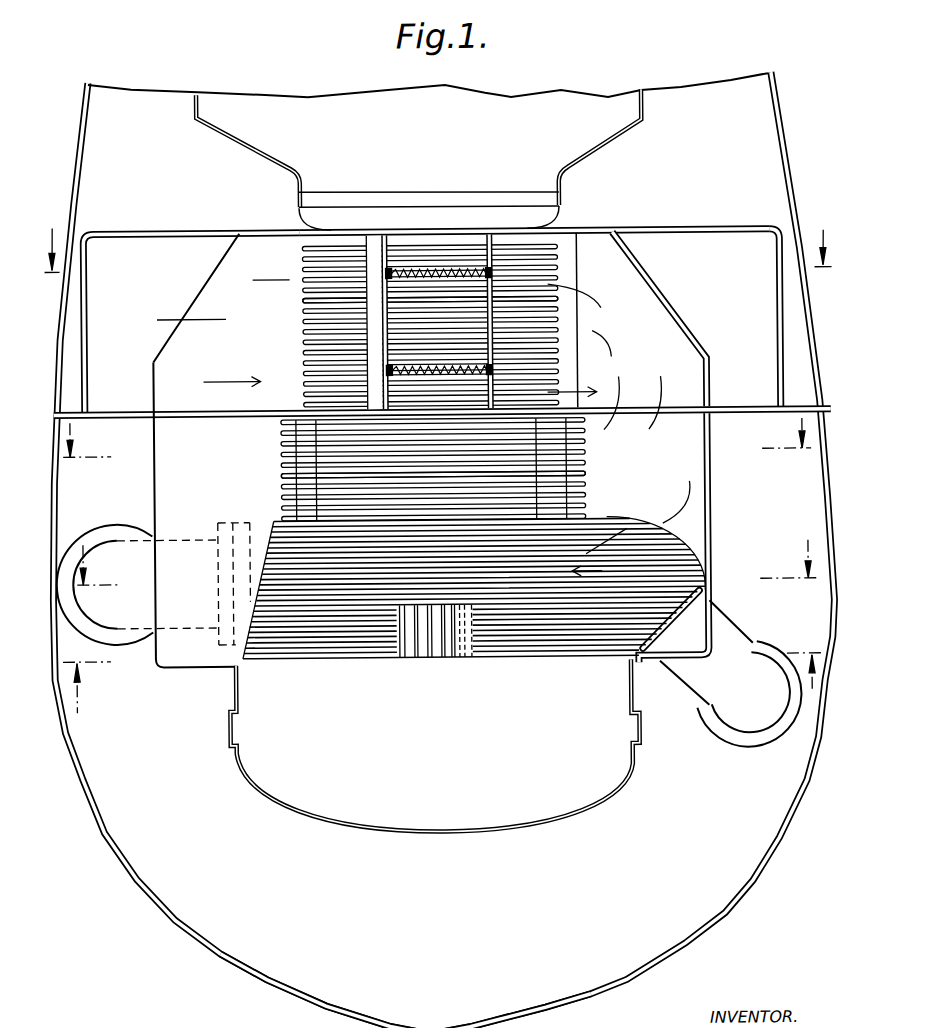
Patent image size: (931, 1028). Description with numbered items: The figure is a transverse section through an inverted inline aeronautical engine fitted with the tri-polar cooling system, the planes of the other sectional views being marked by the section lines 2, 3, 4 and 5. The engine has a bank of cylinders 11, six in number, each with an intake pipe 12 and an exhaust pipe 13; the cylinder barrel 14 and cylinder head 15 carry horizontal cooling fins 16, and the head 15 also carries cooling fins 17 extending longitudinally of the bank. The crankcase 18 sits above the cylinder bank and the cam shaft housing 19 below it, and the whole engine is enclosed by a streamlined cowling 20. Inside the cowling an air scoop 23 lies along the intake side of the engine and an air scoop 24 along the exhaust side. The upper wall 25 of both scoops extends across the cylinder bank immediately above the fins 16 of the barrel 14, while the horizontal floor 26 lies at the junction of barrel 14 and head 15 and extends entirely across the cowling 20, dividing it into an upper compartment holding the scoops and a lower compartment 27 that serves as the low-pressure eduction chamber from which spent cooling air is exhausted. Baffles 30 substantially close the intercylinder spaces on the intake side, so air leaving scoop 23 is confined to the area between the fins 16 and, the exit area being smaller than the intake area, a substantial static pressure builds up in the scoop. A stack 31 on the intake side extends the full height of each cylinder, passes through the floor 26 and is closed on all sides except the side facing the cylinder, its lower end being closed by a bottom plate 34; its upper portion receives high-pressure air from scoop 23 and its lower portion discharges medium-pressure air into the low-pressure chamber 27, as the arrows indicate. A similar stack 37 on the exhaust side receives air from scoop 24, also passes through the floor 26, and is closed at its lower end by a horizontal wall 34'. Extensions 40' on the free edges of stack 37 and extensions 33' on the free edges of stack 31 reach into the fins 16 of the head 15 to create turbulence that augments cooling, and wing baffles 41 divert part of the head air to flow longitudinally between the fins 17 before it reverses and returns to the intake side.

The cylinders 11 is at (305, 262).
The intake pipe 12 is at (117, 547).
The exhaust pipe 13 is at (720, 643).
The cylinder barrel 14 is at (517, 250).
The cylinder head 15 is at (283, 478).
The horizontal cooling fins 16 is at (302, 315).
The cooling fins 17 is at (427, 657).
The crankcase 18 is at (617, 135).
The cam shaft housing 19 is at (552, 806).
The cowling 20 is at (296, 1006).
The air scoop 23 is at (125, 250).
The air scoop 24 is at (738, 247).
The upper wall 25 is at (647, 225).
The floor 26 is at (753, 390).
The lower compartment 27 is at (223, 926).
The baffles 30 is at (372, 245).
The stack 31 is at (220, 282).
The extensions 33' is at (277, 471).
The bottom plate 34 is at (194, 539).
The horizontal walls 34' is at (671, 647).
The stack 37 is at (655, 313).
The extensions 40' is at (619, 403).
The wing baffles 41 is at (470, 657).
The section line 2- 2 is at (438, 262).
The section line 3- 3 is at (437, 452).
The section line 4- 4 is at (447, 576).
The section line 5- 5 is at (443, 672).